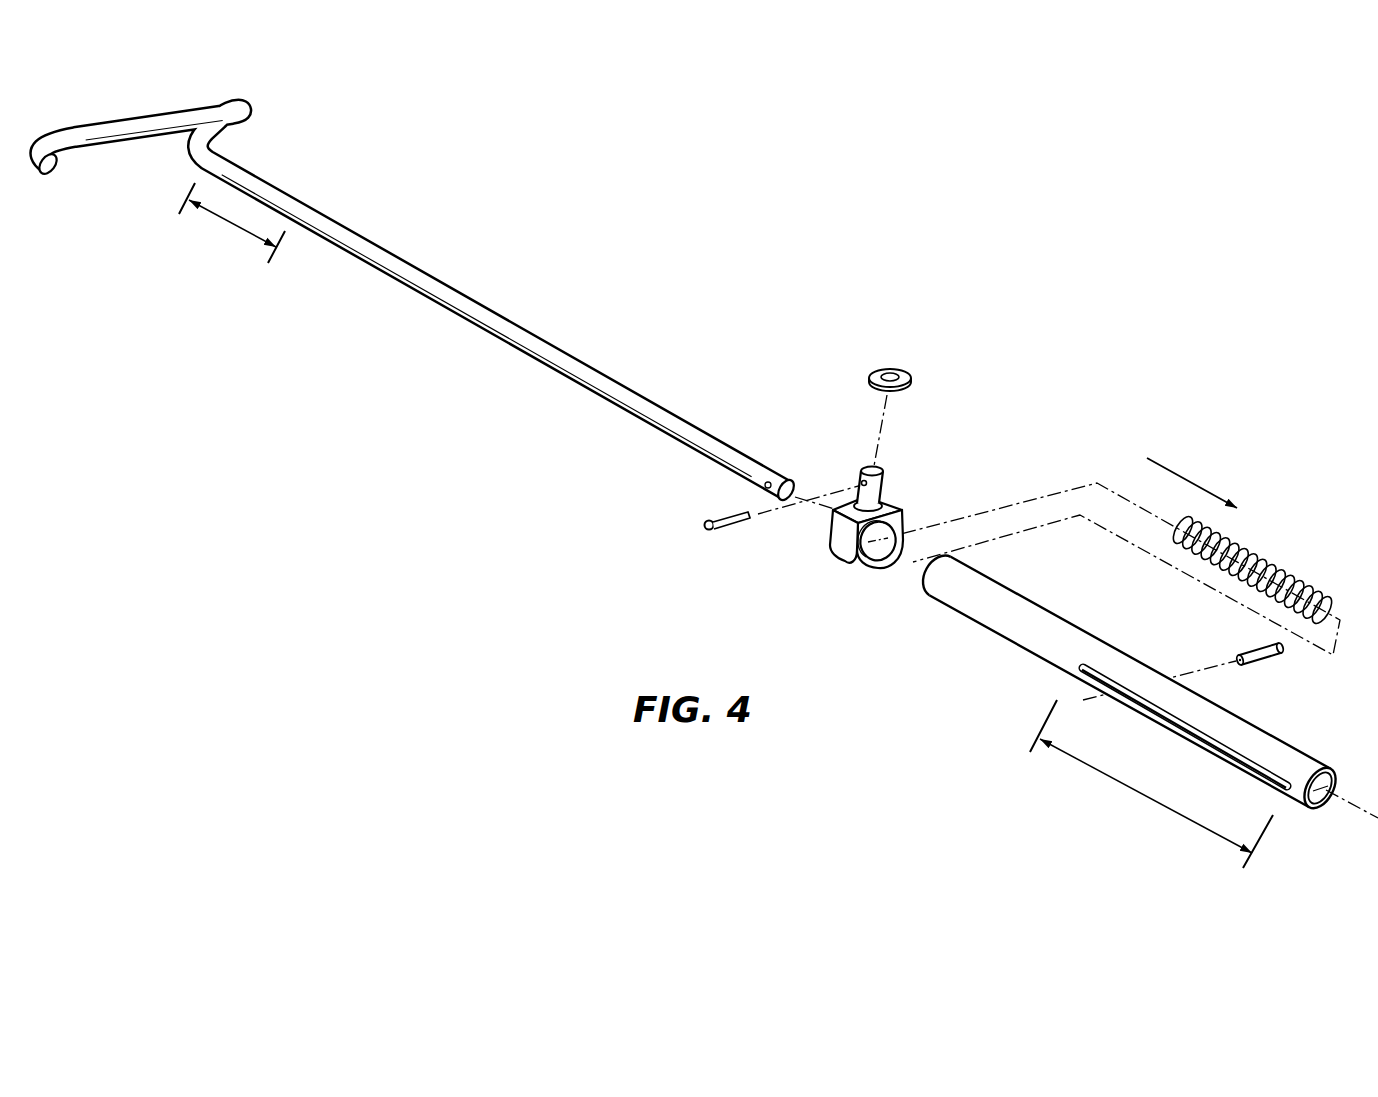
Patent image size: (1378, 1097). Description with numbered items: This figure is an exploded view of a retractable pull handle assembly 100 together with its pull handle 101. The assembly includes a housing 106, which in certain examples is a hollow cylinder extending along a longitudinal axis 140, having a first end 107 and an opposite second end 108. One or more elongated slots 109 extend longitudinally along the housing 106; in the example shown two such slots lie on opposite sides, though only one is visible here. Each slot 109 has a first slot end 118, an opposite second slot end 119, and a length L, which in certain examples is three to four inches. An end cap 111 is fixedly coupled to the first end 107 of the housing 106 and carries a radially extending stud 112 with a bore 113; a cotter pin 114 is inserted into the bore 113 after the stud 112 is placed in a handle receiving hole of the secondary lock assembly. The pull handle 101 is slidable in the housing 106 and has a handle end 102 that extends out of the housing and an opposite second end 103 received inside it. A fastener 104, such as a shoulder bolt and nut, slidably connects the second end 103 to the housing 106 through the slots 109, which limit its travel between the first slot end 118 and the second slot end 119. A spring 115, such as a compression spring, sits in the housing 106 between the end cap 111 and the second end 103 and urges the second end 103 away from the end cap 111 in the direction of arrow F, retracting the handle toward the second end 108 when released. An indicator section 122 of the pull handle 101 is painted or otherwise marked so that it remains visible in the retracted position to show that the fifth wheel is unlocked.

The pull handle assembly 100 is at (583, 586).
The pull handle 101 is at (570, 368).
The handle end 102 is at (270, 107).
The second end 103 is at (767, 398).
The fastener 104 is at (1243, 635).
The housing 106 is at (997, 637).
The first end 107 is at (908, 592).
The second end 108 is at (1338, 760).
The elongated slot 109 is at (1257, 718).
The end cap 111 is at (848, 557).
The stud 112 is at (882, 468).
The bore 113 is at (862, 483).
The cotter pin 114 is at (725, 515).
The spring 115 is at (1273, 570).
The first slot end 118 is at (1065, 682).
The second slot end 119 is at (1287, 803).
The indicator section 122 is at (233, 226).
The longitudinal axis 140 is at (1352, 824).
The length L is at (1127, 793).
The arrow F is at (1190, 482).